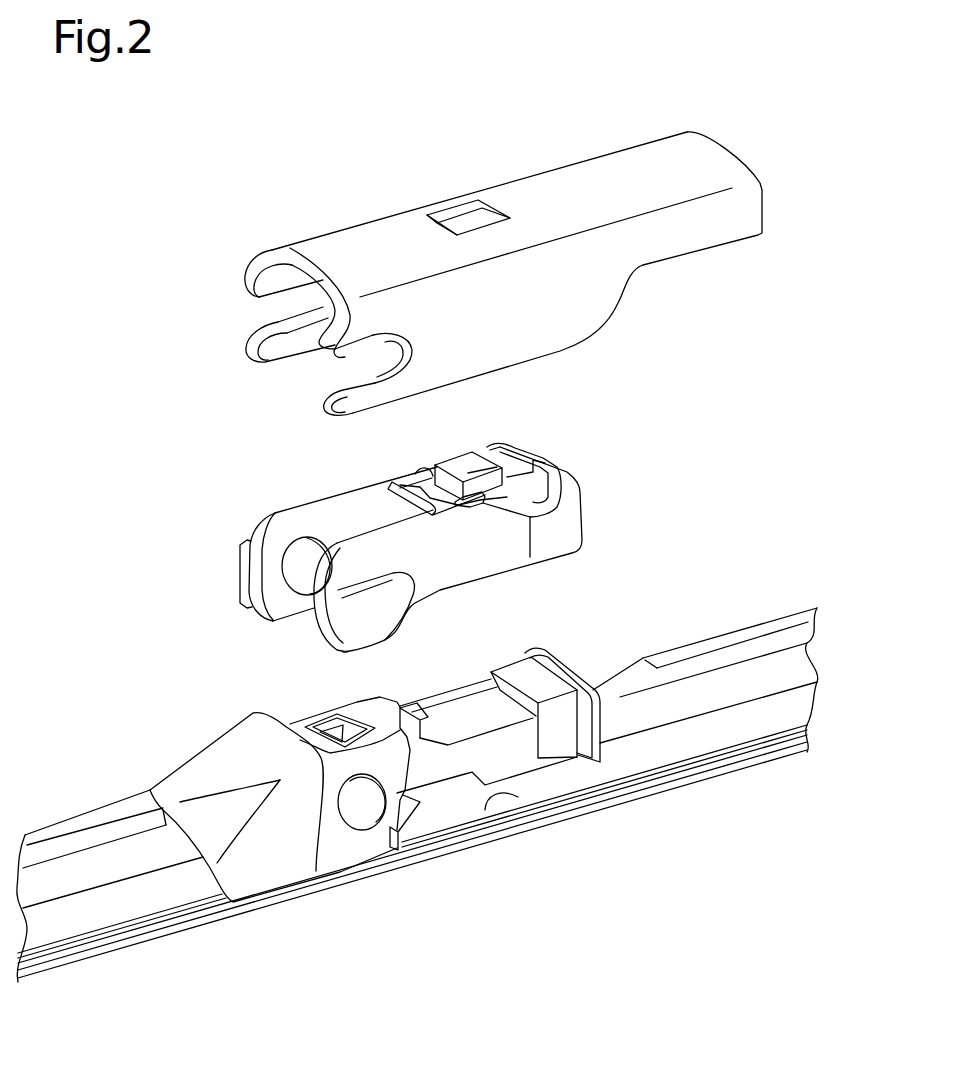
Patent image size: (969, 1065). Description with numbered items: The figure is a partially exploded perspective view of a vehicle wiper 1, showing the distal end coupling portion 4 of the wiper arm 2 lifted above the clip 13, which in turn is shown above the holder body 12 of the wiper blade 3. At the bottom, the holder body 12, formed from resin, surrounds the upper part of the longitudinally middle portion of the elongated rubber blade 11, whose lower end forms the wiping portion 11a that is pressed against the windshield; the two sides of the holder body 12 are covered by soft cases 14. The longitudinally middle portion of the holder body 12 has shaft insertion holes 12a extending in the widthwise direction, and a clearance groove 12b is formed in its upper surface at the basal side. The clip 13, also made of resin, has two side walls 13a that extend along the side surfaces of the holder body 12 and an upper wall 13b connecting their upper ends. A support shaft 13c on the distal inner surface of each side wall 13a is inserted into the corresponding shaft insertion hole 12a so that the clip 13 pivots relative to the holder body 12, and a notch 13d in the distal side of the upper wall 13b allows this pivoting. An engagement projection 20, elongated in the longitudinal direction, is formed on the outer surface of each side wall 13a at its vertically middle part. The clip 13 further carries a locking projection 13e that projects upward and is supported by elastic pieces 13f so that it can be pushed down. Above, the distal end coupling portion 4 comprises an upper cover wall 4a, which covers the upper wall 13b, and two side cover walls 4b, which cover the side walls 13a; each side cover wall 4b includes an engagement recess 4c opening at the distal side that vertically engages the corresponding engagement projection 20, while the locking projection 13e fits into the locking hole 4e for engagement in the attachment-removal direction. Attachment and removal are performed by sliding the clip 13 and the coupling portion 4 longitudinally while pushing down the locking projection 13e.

The vehicle wiper 1 is at (304, 126).
The wiper arm 2 is at (713, 152).
The wiper blade 3 is at (212, 452).
The distal end coupling portion 4 is at (367, 233).
The upper cover wall 4a is at (410, 237).
The side cover walls 4b is at (278, 350).
The engagement recess 4c is at (278, 323).
The locking hole 4e is at (461, 212).
The rubber blade 11 is at (127, 950).
The wiping portion 11a is at (198, 930).
The holder body 12 is at (314, 712).
The shaft insertion holes 12a is at (370, 830).
The clearance groove 12b is at (485, 722).
The clip 13 is at (484, 573).
The side walls 13a is at (268, 607).
The upper wall 13b is at (420, 471).
The support shaft 13c is at (318, 548).
The notch 13d is at (395, 490).
The locking projection 13e is at (468, 462).
The elastic pieces 13f is at (547, 452).
The soft cases 14 is at (735, 675).
The engagement projection 20 is at (247, 567).